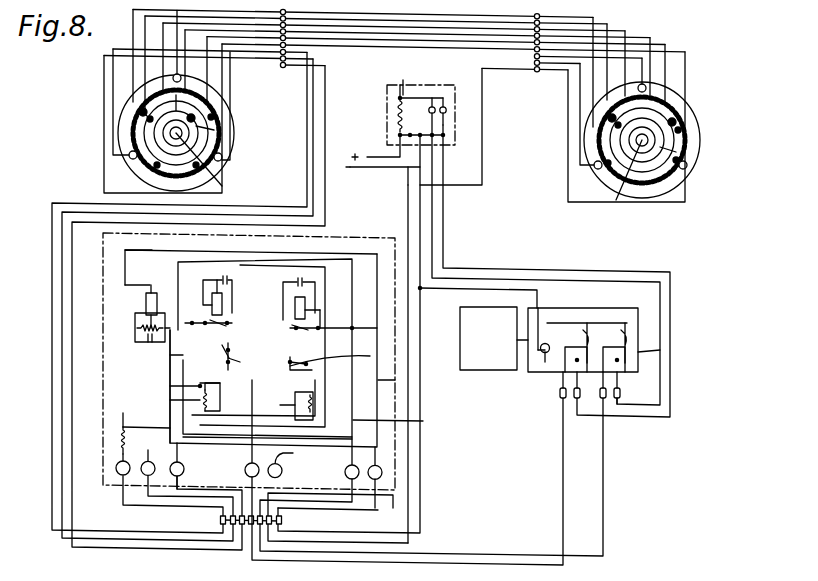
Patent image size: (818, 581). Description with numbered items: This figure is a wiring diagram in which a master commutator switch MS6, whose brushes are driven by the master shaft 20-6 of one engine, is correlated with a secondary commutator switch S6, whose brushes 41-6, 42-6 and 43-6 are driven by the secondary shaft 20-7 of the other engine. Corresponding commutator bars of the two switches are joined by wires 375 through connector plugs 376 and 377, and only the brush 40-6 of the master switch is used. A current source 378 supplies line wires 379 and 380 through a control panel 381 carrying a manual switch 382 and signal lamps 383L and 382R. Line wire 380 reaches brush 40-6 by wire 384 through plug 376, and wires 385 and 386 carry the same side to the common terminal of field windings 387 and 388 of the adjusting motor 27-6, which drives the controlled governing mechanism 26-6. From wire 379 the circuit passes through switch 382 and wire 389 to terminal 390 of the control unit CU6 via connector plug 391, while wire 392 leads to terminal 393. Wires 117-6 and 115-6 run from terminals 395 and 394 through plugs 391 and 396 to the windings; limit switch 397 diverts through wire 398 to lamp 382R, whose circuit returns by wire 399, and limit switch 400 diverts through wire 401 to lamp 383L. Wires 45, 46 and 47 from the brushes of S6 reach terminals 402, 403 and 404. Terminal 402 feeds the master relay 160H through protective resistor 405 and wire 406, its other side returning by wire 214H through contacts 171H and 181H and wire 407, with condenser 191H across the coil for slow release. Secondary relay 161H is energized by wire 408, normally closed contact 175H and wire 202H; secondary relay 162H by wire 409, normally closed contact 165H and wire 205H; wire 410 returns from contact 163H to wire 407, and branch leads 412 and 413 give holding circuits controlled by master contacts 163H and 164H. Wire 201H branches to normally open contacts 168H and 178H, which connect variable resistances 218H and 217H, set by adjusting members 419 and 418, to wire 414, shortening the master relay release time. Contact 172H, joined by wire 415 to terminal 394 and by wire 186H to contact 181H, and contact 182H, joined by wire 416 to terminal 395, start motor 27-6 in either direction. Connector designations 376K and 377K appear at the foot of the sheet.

The connecting wires 375 is at (405, 48).
The connector plug 377 is at (284, 72).
The connector plug 376 is at (537, 78).
The secondary commutator switch S6 is at (118, 131).
The brush 42-6 is at (140, 112).
The brush 41-6 is at (186, 97).
The brush 43-6 is at (216, 128).
The secondary shaft 20-7 is at (218, 163).
The master commutator switch MS6 is at (704, 118).
The brush 40-6 is at (680, 152).
The master shaft 20-6 is at (617, 179).
The manual control switch 382 is at (397, 106).
The control panel 381 is at (403, 82).
The signal lamp 383L is at (434, 106).
The signal lamp 382R is at (446, 113).
The line wire 379 is at (373, 154).
The source of current 378 is at (347, 168).
The line wire 380 is at (382, 172).
The wire 389 is at (407, 224).
The wire 399 is at (422, 157).
The wire 384 is at (483, 163).
The wire 385 is at (433, 234).
The wire 401 is at (671, 377).
The wire 386 is at (470, 288).
The wire 45 is at (306, 164).
The wire 46 is at (316, 92).
The wire 47 is at (327, 132).
The control unit CU6 is at (405, 431).
The wire 410 is at (214, 252).
The branch lead 412 is at (373, 252).
The master relay contact 163H is at (131, 261).
The master relay contact 164H is at (163, 291).
The master relay 160H is at (146, 307).
The condenser 191H is at (146, 330).
The wire 406 is at (132, 356).
The wire 409 is at (170, 355).
The secondary relay 161H is at (205, 310).
The wire 202H is at (207, 289).
The normally closed relay contact 165H is at (223, 328).
The relay contact 172H is at (225, 354).
The relay contact 171H is at (226, 363).
The adjusting member 419 is at (200, 383).
The wire 214H is at (163, 384).
The variable resistance 218H is at (162, 398).
The normally open relay contact 168H is at (226, 397).
The wire 205H is at (283, 310).
The secondary relay 162H is at (328, 305).
The branch lead 413 is at (330, 316).
The normally closed relay contact 175H is at (316, 333).
The relay contact 182H is at (313, 355).
The relay contact 181H is at (370, 356).
The normally open relay contact 178H is at (306, 413).
The variable resistance 217H is at (303, 426).
The wire 186H is at (300, 461).
The adjusting member 418 is at (398, 381).
The wire 407 is at (396, 400).
The wire 408 is at (396, 449).
The wire 392 is at (419, 485).
The wire 201H is at (122, 422).
The protective resistor 405 is at (121, 435).
The wire 414 is at (190, 427).
The terminal 402 is at (115, 472).
The terminal 403 is at (148, 460).
The terminal 404 is at (184, 471).
The wire 415 is at (245, 459).
The wire 416 is at (290, 475).
The terminal 390 is at (352, 469).
The terminal 393 is at (376, 480).
The terminal 394 is at (226, 505).
The connector plug 391 is at (288, 521).
The terminal 395 is at (306, 497).
The wire 117-6 is at (479, 562).
The conductor 115-6 is at (472, 572).
The connector 376K is at (276, 579).
The connector 377K is at (620, 579).
The speed varying mechanism 26-6 is at (486, 371).
The adjusting motor 27-6 is at (538, 376).
The limit switch 397 is at (576, 349).
The field winding 387 is at (586, 322).
The field winding 388 is at (627, 322).
The limit switch 400 is at (640, 351).
The connector plug 396 is at (557, 402).
The wire 398 is at (610, 416).